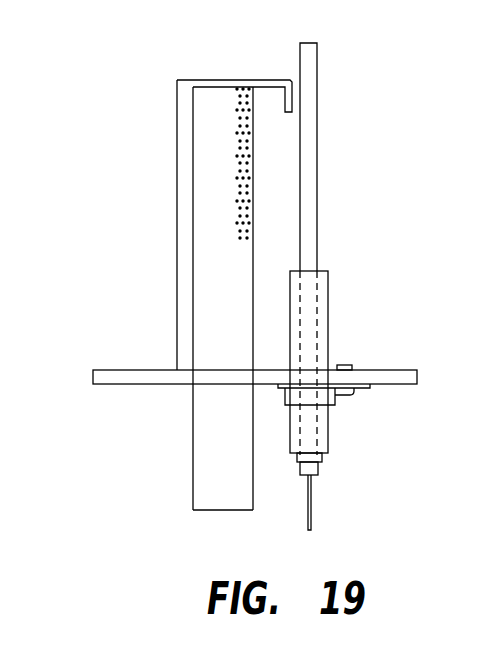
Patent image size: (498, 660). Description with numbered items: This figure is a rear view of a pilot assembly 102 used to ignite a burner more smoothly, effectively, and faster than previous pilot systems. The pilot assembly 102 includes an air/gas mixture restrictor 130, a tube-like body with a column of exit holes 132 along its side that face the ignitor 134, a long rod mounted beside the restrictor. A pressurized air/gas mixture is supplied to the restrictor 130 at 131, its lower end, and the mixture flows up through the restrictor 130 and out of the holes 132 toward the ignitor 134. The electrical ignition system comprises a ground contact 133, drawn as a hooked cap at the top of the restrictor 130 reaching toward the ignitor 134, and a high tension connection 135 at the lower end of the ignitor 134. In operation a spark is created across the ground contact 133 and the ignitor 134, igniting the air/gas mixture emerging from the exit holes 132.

The pilot assembly 102 is at (237, 294).
The air/gas mixture restrictor 130 is at (207, 481).
The air/gas mixture supply point 131 is at (218, 517).
The exit holes 132 is at (249, 187).
The ground contact 133 is at (262, 80).
The ignitor 134 is at (307, 146).
The high tension connection 135 is at (312, 505).